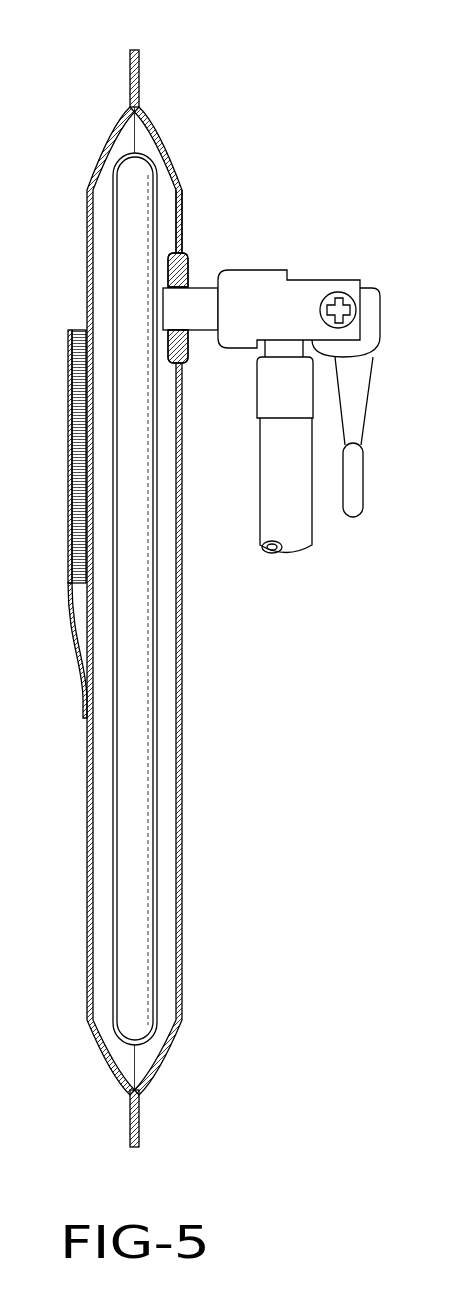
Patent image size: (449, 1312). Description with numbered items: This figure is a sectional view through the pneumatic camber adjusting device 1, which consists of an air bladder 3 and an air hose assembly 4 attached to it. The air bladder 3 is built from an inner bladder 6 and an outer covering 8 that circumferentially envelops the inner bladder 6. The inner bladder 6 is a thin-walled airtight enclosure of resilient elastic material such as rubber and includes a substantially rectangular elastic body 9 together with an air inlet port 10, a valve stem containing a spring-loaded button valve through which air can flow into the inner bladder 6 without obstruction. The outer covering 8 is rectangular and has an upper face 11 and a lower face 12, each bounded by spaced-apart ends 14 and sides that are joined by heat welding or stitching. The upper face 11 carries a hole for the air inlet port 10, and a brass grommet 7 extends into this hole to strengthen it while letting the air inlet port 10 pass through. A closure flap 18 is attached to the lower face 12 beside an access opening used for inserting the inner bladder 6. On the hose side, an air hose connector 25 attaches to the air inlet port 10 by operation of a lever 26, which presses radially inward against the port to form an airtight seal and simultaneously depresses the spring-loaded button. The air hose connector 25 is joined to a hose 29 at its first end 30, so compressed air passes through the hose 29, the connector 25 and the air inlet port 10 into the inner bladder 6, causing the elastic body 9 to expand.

The pneumatic camber adjusting device 1 is at (193, 60).
The air bladder 3 is at (143, 600).
The air hose assembly 4 is at (299, 461).
The inner bladder 6 is at (182, 343).
The brass grommet 7 is at (180, 257).
The outer covering 8 is at (193, 194).
The elastic body 9 is at (128, 262).
The air inlet port 10 is at (186, 308).
The upper face 11 is at (183, 660).
The lower face 12 is at (88, 818).
The ends 14 is at (131, 50).
The closure flap 18 is at (56, 432).
The air hose connector 25 is at (298, 292).
The lever 26 is at (358, 482).
The hose 29 is at (265, 512).
The first end 30 is at (273, 450).